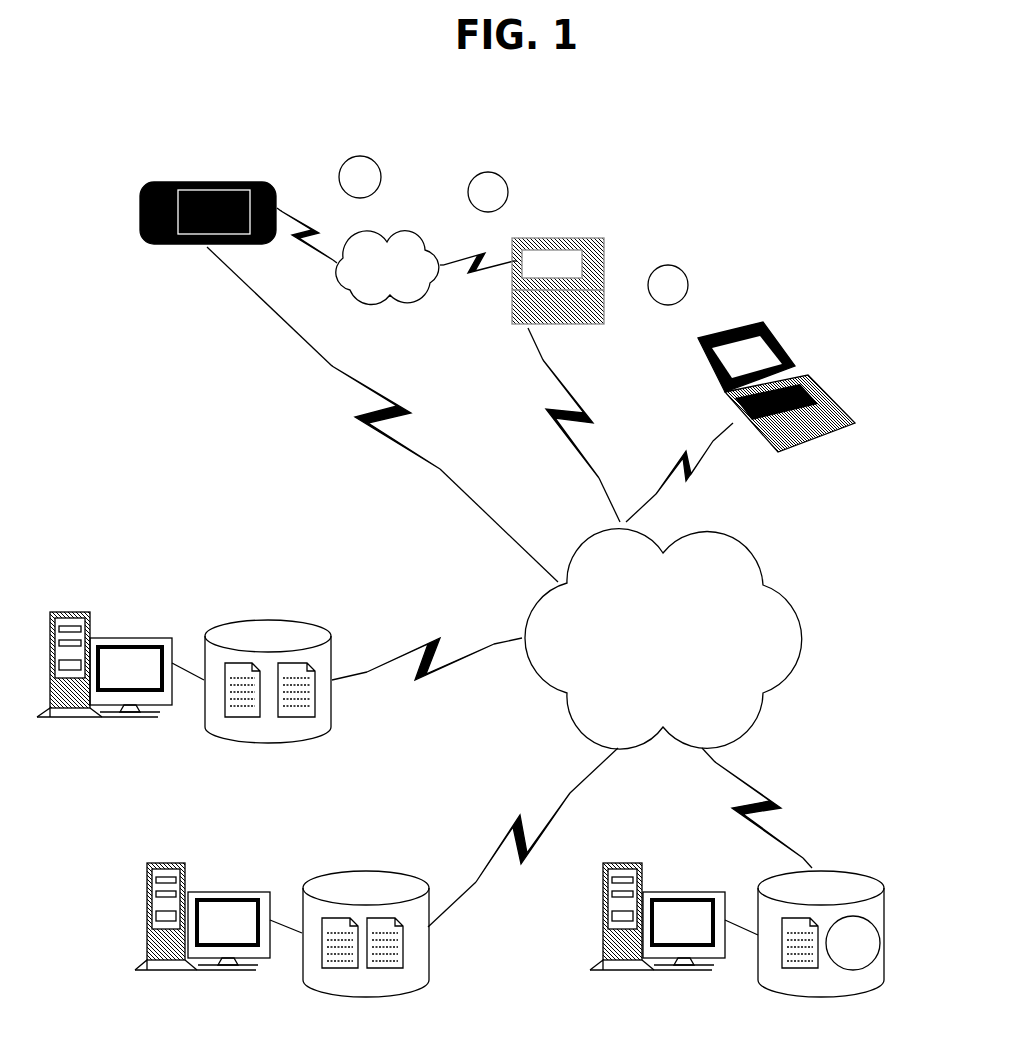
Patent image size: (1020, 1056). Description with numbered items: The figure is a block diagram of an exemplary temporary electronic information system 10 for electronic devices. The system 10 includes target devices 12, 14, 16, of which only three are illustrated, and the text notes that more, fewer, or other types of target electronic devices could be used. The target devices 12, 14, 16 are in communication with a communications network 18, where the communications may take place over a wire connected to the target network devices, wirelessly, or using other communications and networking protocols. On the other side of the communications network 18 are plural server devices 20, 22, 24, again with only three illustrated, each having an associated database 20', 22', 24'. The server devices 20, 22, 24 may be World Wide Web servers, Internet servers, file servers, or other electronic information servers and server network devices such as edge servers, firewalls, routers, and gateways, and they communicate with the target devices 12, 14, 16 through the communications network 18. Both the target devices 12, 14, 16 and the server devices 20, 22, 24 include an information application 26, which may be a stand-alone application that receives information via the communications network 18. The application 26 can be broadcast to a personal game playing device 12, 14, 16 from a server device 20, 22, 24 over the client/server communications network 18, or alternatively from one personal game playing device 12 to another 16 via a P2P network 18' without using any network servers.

The system 10 is at (745, 109).
The target device 12 is at (215, 178).
The target device 14 is at (576, 242).
The target device 16 is at (765, 320).
The communications network 18 is at (688, 639).
The P2P network 18' is at (396, 307).
The server device 20 is at (116, 659).
The database 20' is at (269, 661).
The server device 22 is at (218, 907).
The database 22' is at (367, 914).
The server device 24 is at (663, 907).
The database 24' is at (846, 913).
The information application 26 is at (272, 184).